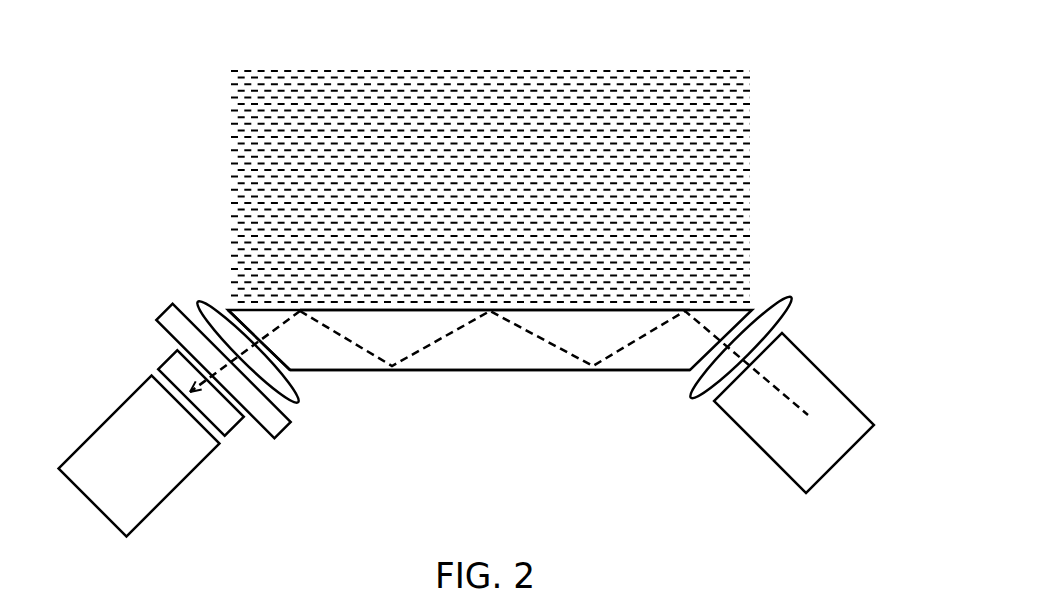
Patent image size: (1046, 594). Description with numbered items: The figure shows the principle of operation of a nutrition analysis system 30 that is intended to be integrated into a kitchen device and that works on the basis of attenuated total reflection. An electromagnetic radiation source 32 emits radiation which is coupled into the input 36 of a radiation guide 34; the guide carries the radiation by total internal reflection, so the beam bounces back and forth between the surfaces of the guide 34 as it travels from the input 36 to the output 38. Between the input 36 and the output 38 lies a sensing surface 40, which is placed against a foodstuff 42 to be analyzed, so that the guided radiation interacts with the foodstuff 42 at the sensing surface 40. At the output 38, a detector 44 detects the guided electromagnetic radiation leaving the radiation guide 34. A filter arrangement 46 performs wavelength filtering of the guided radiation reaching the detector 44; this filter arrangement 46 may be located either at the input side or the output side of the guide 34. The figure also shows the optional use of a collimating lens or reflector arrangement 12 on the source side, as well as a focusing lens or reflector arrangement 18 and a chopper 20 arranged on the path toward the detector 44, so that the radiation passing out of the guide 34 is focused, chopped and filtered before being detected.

The collimating lens or reflector arrangement 12 is at (790, 308).
The focusing lens or reflector arrangement 18 is at (197, 303).
The chopper 20 is at (163, 308).
The nutrition analysis system 30 is at (793, 147).
The electromagnetic radiation source 32 is at (828, 377).
The radiation guide 34 is at (516, 370).
The input 36 is at (738, 330).
The output 38 is at (257, 331).
The sensing surface 40 is at (418, 310).
The foodstuff 42 is at (483, 172).
The detector 44 is at (107, 414).
The filter arrangement 46 is at (165, 363).